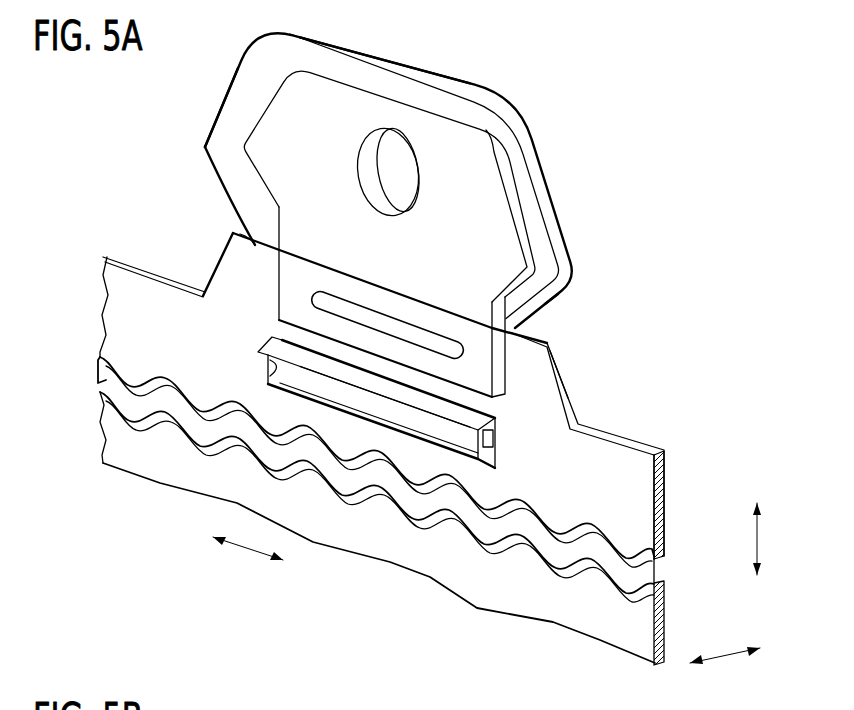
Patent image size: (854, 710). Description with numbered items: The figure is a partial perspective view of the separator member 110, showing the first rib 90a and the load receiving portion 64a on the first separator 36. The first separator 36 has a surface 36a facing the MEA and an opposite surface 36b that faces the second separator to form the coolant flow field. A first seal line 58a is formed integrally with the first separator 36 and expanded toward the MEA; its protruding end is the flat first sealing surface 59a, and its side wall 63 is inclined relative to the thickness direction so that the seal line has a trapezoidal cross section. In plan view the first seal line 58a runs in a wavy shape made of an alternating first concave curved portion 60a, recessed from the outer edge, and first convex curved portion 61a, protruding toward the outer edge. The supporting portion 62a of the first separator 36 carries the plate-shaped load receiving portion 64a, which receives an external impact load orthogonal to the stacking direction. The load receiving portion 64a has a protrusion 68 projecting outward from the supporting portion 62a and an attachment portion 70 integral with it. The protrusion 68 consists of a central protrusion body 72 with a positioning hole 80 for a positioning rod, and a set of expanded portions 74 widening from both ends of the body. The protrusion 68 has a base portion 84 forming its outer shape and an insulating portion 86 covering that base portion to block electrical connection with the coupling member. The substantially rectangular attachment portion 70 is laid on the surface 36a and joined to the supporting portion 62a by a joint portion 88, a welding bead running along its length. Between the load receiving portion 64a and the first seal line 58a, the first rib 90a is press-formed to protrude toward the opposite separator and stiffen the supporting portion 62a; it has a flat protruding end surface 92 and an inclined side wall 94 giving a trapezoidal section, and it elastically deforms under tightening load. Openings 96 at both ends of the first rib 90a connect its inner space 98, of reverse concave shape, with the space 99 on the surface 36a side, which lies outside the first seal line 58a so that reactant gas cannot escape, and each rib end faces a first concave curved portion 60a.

The separator member 110 is at (108, 213).
The load receiving portion 64a is at (538, 133).
The protrusion body 72 is at (395, 87).
The expanded portions 74 is at (220, 150).
The positioning hole 80 is at (370, 190).
The protrusion 68 is at (616, 165).
The base portion 84 is at (512, 187).
The insulating portion 86 is at (548, 213).
The attachment portion 70 is at (288, 292).
The joint portion 88 is at (442, 342).
The supporting portion 62a is at (232, 262).
The space 99 is at (523, 433).
The first rib 90a is at (263, 353).
The protruding end surface 92 is at (413, 422).
The inner space 98 is at (343, 397).
The openings 96 is at (272, 366).
The side wall 94 is at (497, 433).
The first seal line 58a is at (558, 677).
The first sealing surface 59a is at (578, 548).
The first concave curved portion 60a is at (478, 540).
The first convex curved portion 61a is at (590, 560).
The first separator 36 is at (627, 637).
The surface 36a is at (643, 497).
The surface 36b is at (637, 482).
The side wall 63 is at (658, 588).